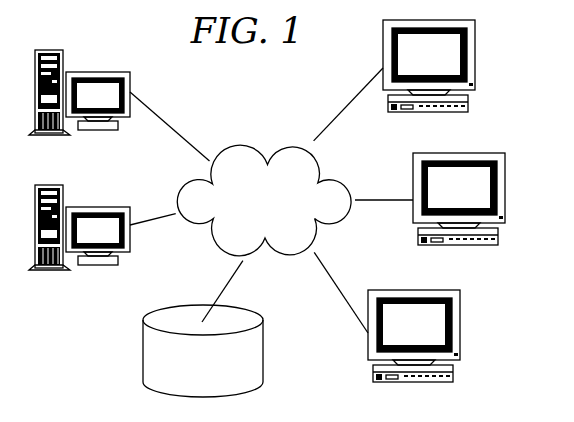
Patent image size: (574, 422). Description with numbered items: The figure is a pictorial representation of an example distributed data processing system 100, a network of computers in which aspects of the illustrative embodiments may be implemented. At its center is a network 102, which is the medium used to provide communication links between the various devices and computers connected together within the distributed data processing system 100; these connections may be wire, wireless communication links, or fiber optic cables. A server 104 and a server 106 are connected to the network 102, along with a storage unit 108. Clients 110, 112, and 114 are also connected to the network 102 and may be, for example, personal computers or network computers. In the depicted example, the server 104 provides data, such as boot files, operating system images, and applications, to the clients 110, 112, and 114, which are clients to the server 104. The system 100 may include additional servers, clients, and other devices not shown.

The distributed data processing system 100 is at (107, 331).
The network 102 is at (237, 141).
The server 104 is at (95, 72).
The server 106 is at (95, 207).
The storage unit 108 is at (263, 340).
The client 110 is at (475, 60).
The client 112 is at (503, 192).
The client 114 is at (460, 325).